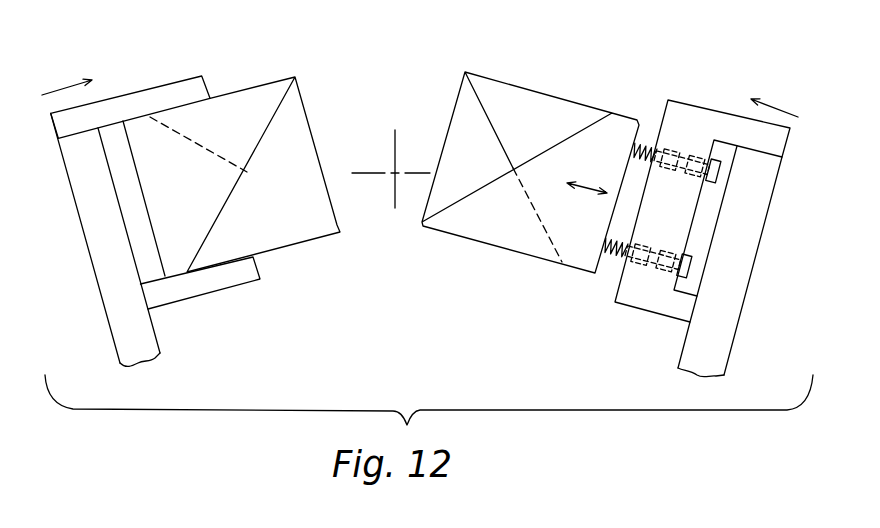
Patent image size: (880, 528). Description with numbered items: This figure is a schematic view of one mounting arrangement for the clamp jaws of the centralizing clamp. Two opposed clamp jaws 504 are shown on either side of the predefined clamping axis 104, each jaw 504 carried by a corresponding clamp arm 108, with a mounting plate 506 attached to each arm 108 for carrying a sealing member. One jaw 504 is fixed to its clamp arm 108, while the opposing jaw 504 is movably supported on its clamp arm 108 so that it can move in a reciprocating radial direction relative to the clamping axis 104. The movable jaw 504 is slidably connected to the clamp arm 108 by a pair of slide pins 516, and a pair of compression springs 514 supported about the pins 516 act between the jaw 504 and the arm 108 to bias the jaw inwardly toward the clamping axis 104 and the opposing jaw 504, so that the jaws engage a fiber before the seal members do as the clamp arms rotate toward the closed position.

The clamping axis 104 is at (393, 171).
The clamp arm 108 is at (100, 250).
The clamp jaw 504 is at (293, 256).
The mounting plate 506 is at (137, 97).
The compression spring 514 is at (680, 143).
The slide pin 516 is at (643, 140).